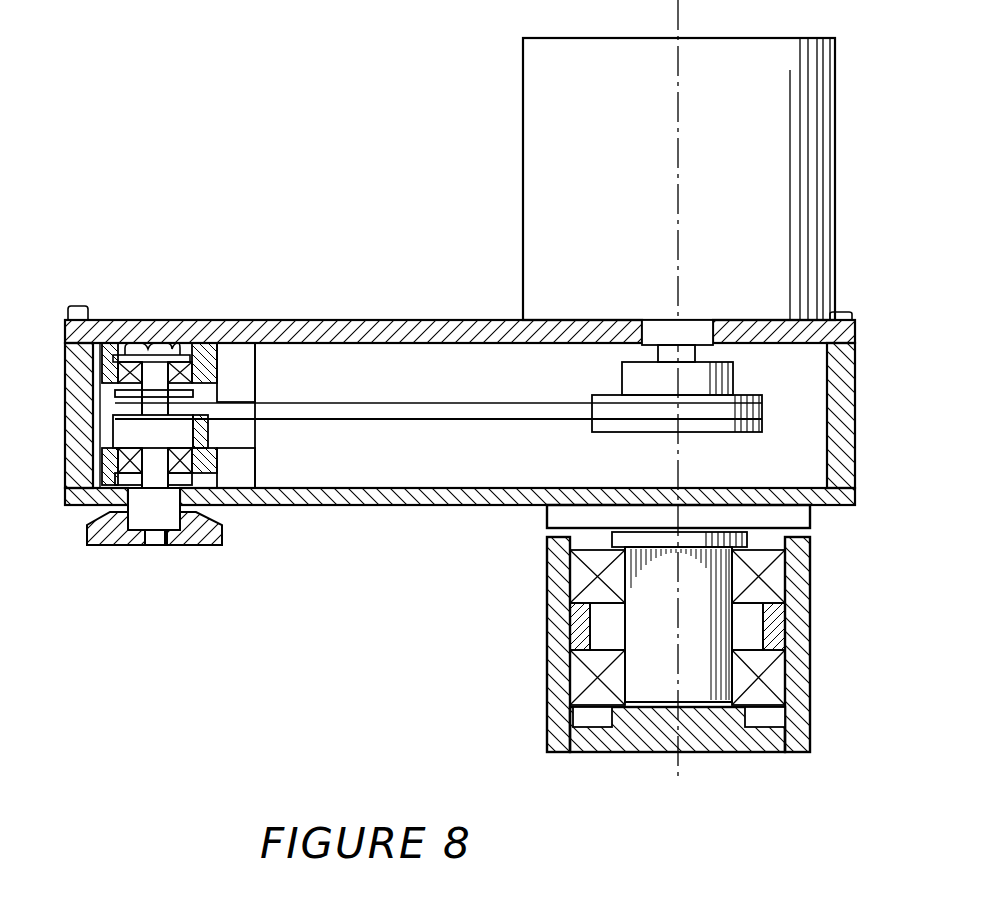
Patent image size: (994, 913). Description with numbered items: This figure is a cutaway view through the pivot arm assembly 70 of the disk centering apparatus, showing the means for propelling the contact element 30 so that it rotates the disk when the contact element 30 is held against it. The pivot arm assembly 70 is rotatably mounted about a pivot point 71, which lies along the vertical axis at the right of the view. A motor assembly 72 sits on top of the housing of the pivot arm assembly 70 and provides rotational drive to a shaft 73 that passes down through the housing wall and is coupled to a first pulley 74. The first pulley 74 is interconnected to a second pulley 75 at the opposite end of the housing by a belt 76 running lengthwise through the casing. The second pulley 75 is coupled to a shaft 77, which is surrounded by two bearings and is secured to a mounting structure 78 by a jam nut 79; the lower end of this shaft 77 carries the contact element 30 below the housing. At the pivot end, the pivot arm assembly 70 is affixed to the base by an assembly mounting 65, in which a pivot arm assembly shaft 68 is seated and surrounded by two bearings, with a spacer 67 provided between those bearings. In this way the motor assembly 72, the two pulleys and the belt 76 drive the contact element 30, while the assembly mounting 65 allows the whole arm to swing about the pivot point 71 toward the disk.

The contact element 30 is at (203, 546).
The assembly mounting 65 is at (812, 753).
The spacer 67 is at (806, 628).
The pivot arm assembly shaft 68 is at (655, 690).
The pivot arm assembly 70 is at (462, 467).
The pivot point 71 is at (680, 768).
The motor assembly 72 is at (542, 153).
The shaft 73 is at (658, 325).
The first pulley 74 is at (752, 397).
The second pulley 75 is at (123, 433).
The belt 76 is at (420, 410).
The shaft 77 is at (157, 375).
The mounting structure 78 is at (240, 468).
The jam nut 79 is at (148, 343).